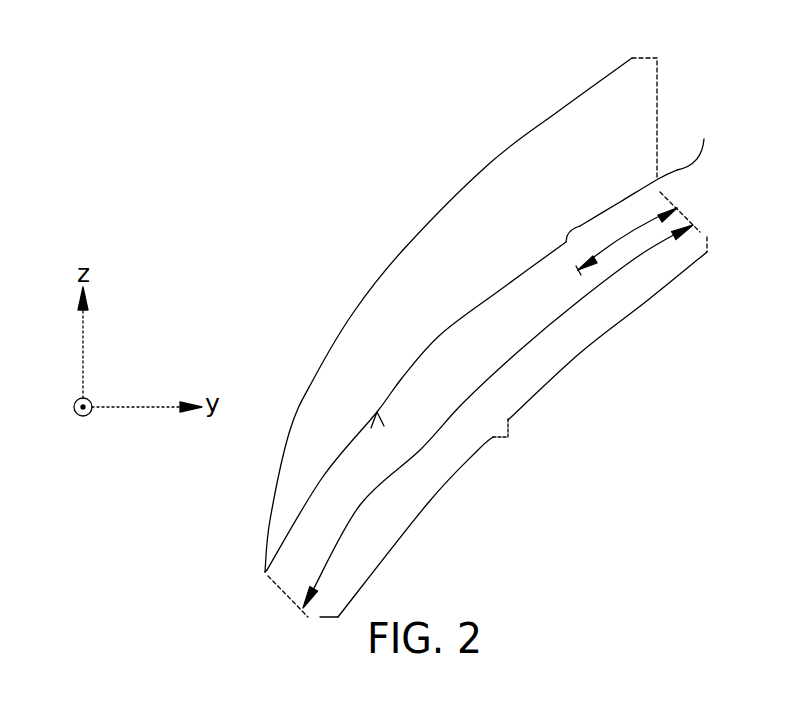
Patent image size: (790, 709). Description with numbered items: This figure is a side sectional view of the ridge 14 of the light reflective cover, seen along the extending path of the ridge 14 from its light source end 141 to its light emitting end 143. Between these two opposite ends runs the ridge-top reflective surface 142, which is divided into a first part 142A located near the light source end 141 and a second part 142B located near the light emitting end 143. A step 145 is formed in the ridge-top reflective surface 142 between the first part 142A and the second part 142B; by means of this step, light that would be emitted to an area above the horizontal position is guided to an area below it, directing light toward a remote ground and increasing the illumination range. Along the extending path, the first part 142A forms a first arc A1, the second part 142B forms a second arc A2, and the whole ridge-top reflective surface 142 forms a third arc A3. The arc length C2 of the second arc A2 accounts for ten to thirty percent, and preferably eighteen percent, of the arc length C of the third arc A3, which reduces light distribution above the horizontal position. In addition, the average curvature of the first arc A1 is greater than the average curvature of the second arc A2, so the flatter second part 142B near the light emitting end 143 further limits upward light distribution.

The ridge 14 is at (285, 201).
The light source end 141 is at (265, 572).
The ridge-top reflective surface 142 is at (377, 413).
The first part 142A is at (405, 372).
The second part 142B is at (613, 206).
The light emitting end 143 is at (702, 140).
The step 145 is at (566, 241).
The arc length of the third arc C is at (484, 404).
The arc length of the second arc C2 is at (626, 241).
The first arc A1 is at (323, 478).
The second arc A2 is at (633, 196).
The third arc A3 is at (517, 438).